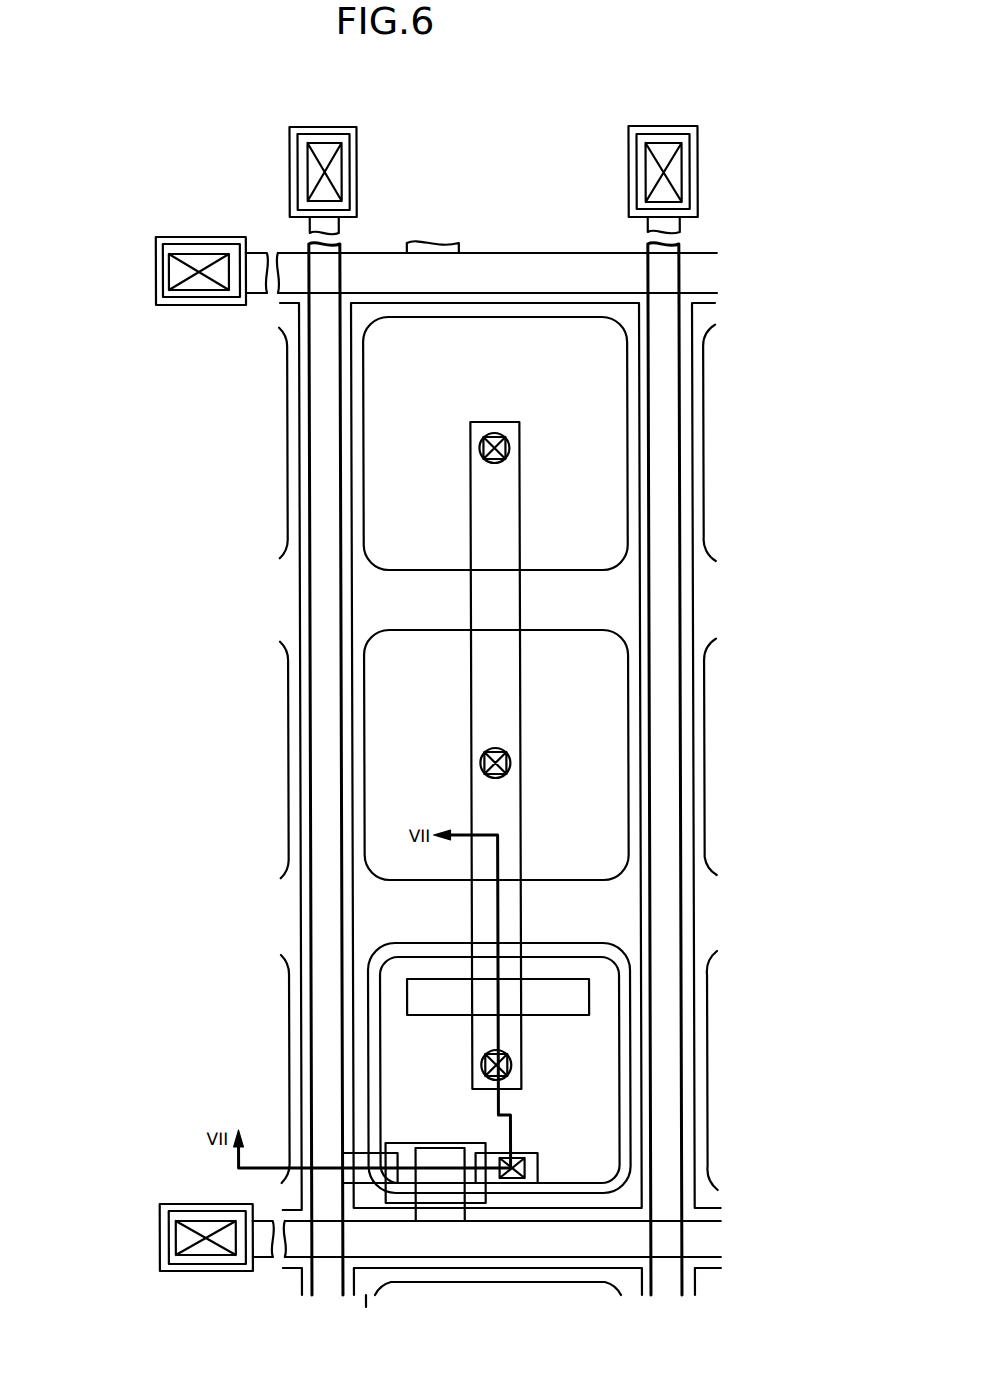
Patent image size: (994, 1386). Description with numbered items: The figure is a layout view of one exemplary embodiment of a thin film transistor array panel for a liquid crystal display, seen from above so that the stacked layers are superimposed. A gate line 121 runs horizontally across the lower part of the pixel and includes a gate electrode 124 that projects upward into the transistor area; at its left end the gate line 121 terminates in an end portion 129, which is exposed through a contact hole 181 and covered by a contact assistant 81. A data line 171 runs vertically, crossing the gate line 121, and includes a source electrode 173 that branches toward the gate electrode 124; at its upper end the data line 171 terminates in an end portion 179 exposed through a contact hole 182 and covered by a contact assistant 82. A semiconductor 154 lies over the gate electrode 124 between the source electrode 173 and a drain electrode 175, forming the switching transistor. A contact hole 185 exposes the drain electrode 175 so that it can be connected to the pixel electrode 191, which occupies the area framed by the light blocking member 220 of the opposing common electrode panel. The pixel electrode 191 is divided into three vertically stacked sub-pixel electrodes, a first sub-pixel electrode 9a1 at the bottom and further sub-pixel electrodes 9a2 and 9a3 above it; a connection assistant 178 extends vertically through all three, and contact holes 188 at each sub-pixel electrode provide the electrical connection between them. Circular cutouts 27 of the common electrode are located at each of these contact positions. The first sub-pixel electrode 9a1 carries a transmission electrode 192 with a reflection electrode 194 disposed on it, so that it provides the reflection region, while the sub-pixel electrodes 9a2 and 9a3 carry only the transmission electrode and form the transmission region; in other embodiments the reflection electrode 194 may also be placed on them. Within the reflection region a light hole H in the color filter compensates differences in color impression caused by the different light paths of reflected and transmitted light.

The contact assistant 82 is at (466, 155).
The end portion of data line 179 is at (337, 127).
The contact hole 182 is at (308, 143).
The contact assistant 81 is at (183, 751).
The contact hole 181 is at (163, 248).
The end portion of gate line 129 is at (169, 272).
The gate line 121 is at (608, 1223).
The data line 171 is at (312, 1055).
The light blocking member 220 is at (638, 419).
The pixel electrode 191 is at (366, 755).
The sub-pixel electrode 9a3 is at (363, 467).
The sub-pixel electrode 9a2 is at (363, 738).
The first sub-pixel electrode 9a1 is at (397, 1063).
The transmission electrode 192 is at (372, 950).
The reflection electrode 194 is at (378, 998).
The light hole H is at (587, 997).
The connection assistant 178 is at (519, 598).
The circular cutout 27 is at (520, 436).
The contact hole 188 is at (520, 448).
The gate electrode 124 is at (410, 1186).
The semiconductor 154 is at (435, 1203).
The source electrode 173 is at (393, 1153).
The drain electrode 175 is at (528, 1183).
The contact hole 185 is at (510, 1180).